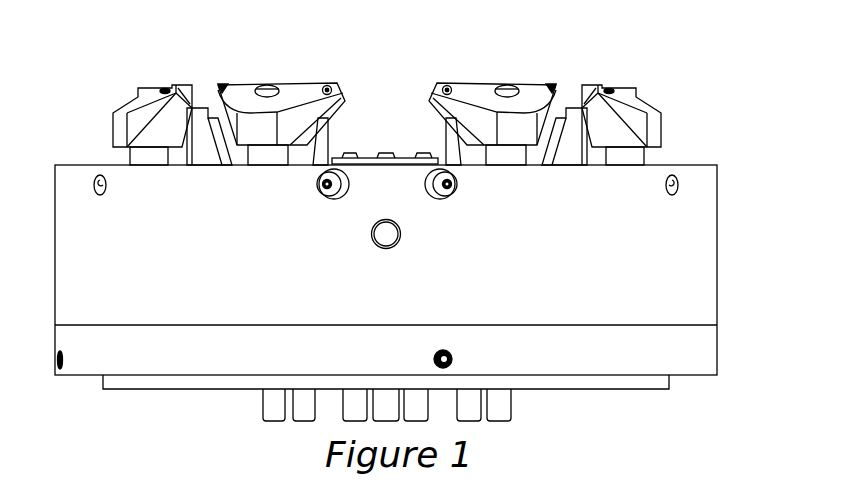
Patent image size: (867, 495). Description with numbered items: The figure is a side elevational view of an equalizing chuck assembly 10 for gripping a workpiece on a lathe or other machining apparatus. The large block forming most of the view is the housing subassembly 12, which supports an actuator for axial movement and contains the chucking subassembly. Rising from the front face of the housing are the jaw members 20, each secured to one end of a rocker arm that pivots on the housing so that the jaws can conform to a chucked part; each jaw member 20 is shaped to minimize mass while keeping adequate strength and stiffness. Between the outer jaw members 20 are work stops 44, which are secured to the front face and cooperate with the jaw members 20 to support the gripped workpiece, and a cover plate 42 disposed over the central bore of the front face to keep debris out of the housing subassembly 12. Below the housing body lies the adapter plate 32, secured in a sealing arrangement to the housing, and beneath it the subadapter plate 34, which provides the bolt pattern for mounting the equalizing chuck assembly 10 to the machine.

The equalizing chuck assembly 10 is at (713, 85).
The housing subassembly 12 is at (697, 257).
The jaw member 20 is at (178, 92).
The adapter plate 32 is at (710, 350).
The subadapter plate 34 is at (634, 383).
The cover plate 42 is at (365, 157).
The work stop 44 is at (213, 120).